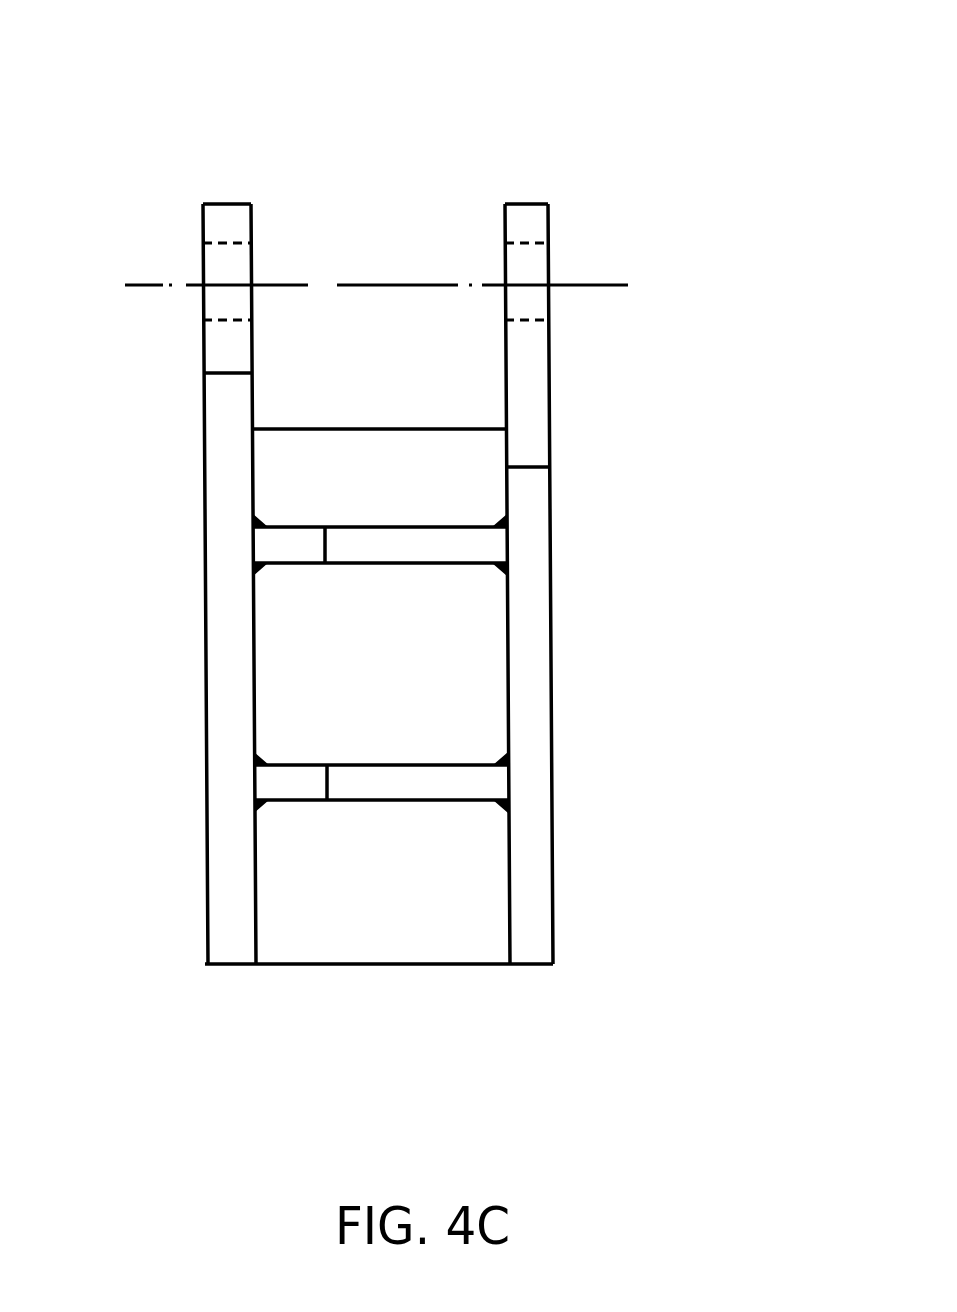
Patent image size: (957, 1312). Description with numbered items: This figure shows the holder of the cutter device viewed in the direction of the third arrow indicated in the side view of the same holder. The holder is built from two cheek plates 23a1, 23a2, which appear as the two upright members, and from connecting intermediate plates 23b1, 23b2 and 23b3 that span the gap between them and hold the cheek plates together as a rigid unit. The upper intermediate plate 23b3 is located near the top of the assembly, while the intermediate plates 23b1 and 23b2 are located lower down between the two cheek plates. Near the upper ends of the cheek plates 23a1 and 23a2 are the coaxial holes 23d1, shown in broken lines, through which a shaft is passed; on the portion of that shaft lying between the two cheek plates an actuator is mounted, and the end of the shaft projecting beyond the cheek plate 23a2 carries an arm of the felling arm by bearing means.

The coaxial holes 23d1 is at (219, 243).
The cheek plate 23a1 is at (535, 548).
The cheek plate 23a2 is at (210, 520).
The intermediate plate 23b1 is at (342, 541).
The intermediate plate 23b2 is at (365, 778).
The intermediate plate 23b3 is at (460, 467).